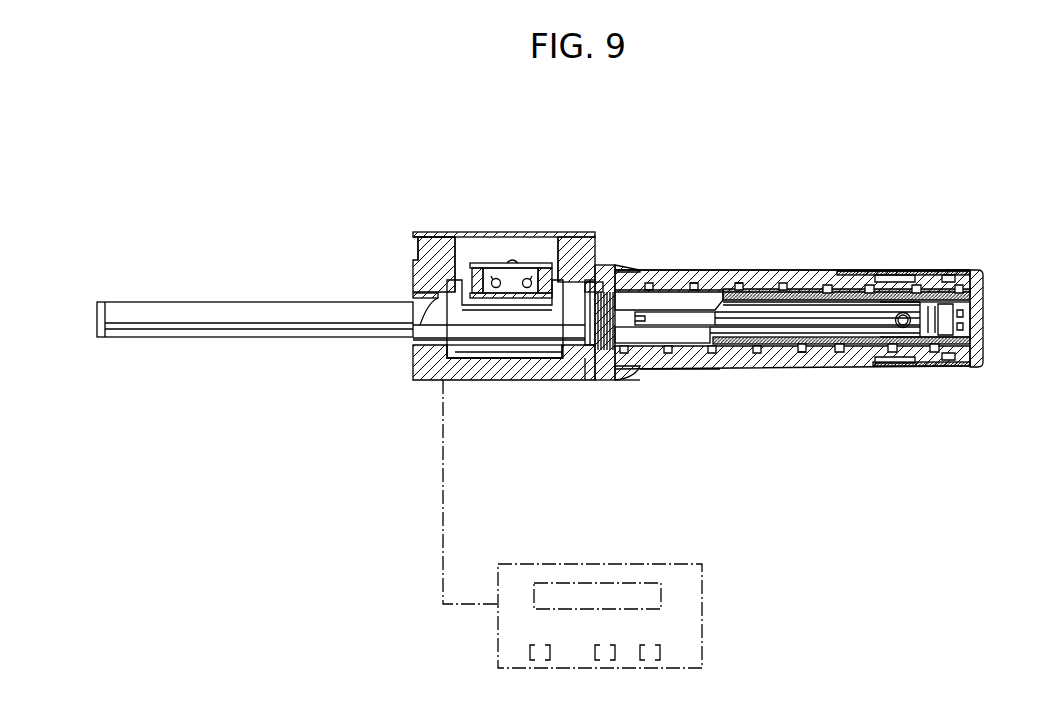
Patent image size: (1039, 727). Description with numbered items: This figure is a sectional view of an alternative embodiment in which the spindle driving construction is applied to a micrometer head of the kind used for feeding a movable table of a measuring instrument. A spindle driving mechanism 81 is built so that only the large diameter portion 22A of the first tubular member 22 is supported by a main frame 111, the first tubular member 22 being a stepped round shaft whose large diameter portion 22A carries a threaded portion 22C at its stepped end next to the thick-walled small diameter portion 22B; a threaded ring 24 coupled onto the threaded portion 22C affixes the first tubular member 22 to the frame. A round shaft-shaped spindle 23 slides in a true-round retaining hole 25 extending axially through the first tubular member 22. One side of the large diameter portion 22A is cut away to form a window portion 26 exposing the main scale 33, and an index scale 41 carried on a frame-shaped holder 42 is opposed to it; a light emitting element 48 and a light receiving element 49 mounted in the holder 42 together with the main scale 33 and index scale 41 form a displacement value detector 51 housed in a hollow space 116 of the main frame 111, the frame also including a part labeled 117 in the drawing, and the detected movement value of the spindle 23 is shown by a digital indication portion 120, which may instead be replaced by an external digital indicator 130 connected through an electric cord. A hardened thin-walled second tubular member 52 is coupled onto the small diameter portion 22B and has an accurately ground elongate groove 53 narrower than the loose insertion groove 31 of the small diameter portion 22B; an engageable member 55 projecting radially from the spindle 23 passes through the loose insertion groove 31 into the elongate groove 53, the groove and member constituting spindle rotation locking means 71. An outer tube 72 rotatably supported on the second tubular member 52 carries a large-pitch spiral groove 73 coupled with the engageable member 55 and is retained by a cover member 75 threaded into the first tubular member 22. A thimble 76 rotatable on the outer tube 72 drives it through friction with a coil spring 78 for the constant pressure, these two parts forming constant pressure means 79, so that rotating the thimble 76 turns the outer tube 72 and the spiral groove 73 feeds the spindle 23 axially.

The first tubular member 22 is at (593, 435).
The large diameter portion 22A is at (581, 371).
The small diameter portion 22B is at (733, 370).
The threaded portion 22C is at (609, 382).
The spindle 23 is at (218, 301).
The threaded ring 24 is at (607, 268).
The retaining hole 25 is at (900, 297).
The window portion 26 is at (597, 235).
The loose insertion groove 31 is at (844, 318).
The main scale 33 is at (553, 275).
The index scale 41 is at (482, 300).
The holder 42 is at (473, 306).
The light emitting element 48 is at (497, 279).
The light receiving element 49 is at (528, 279).
The displacement value detector 51 is at (463, 147).
The second tubular member 52 is at (706, 302).
The elongate groove 53 is at (660, 313).
The engageable member 55 is at (905, 328).
The spindle rotation locking means 71 is at (865, 422).
The outer tube 72 is at (772, 277).
The spiral groove 73 is at (697, 283).
The cover member 75 is at (984, 301).
The thimble 76 is at (945, 275).
The coil spring for the constant pressure 78 is at (972, 276).
The constant pressure means 79 is at (1023, 224).
The spindle driving mechanism 81 is at (890, 215).
The main frame 111 is at (411, 381).
The hollow space 116 is at (455, 232).
The housing top plate 117 is at (418, 232).
The digital indication portion 120 is at (476, 280).
The external digital indicator 130 is at (702, 638).